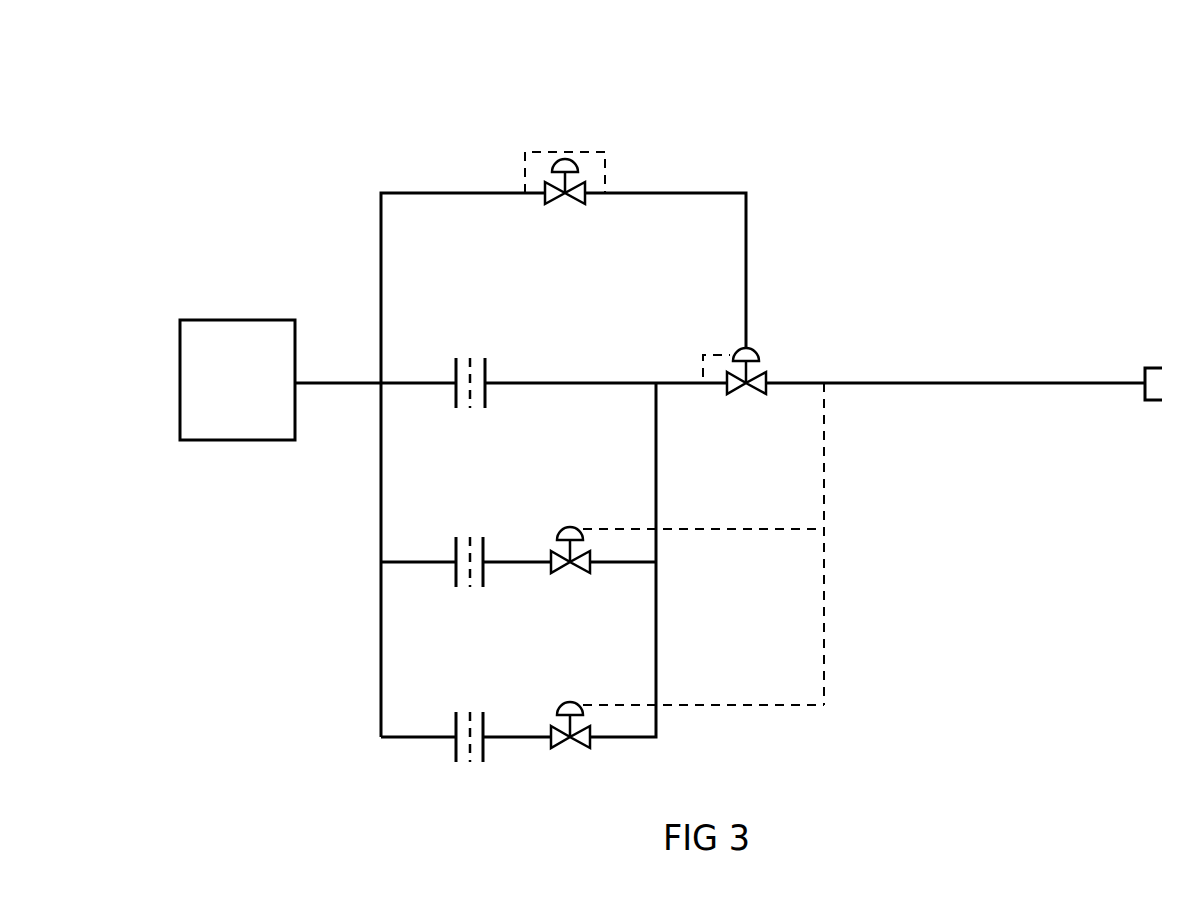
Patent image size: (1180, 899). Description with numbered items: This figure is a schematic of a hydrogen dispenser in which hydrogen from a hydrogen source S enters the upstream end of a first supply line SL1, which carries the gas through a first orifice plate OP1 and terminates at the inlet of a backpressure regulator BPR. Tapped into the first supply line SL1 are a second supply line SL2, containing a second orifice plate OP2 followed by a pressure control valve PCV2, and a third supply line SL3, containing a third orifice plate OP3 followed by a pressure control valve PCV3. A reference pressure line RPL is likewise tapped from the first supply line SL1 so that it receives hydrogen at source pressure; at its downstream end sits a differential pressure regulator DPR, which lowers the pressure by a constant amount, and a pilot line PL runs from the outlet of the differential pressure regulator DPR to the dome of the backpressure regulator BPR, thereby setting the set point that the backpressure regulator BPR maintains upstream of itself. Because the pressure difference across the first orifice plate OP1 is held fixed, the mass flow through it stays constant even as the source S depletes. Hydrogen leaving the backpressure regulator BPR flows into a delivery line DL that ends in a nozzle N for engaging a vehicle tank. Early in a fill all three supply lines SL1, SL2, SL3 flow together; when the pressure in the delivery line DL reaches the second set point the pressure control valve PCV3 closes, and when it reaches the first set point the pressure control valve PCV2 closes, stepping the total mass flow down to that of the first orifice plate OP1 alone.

The hydrogen source S is at (233, 343).
The first supply line SL1 is at (345, 383).
The second supply line SL2 is at (423, 568).
The third supply line SL3 is at (710, 627).
The first orifice plate OP1 is at (466, 370).
The second orifice plate OP2 is at (464, 548).
The third orifice plate OP3 is at (470, 725).
The pressure control valve PCV2 is at (577, 527).
The pressure control valve PCV3 is at (577, 702).
The reference pressure line RPL is at (470, 193).
The differential pressure regulator DPR is at (562, 167).
The pilot line PL is at (688, 193).
The backpressure regulator BPR is at (738, 350).
The delivery line DL is at (965, 383).
The nozzle N is at (1145, 368).